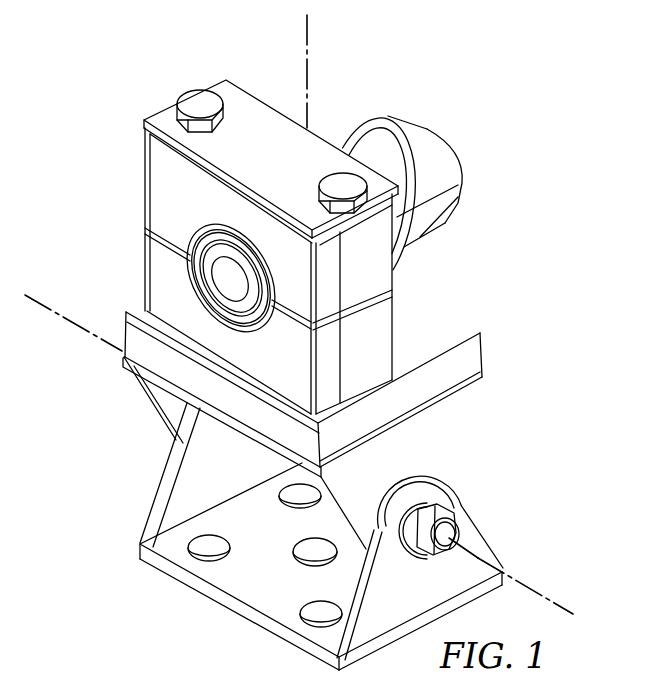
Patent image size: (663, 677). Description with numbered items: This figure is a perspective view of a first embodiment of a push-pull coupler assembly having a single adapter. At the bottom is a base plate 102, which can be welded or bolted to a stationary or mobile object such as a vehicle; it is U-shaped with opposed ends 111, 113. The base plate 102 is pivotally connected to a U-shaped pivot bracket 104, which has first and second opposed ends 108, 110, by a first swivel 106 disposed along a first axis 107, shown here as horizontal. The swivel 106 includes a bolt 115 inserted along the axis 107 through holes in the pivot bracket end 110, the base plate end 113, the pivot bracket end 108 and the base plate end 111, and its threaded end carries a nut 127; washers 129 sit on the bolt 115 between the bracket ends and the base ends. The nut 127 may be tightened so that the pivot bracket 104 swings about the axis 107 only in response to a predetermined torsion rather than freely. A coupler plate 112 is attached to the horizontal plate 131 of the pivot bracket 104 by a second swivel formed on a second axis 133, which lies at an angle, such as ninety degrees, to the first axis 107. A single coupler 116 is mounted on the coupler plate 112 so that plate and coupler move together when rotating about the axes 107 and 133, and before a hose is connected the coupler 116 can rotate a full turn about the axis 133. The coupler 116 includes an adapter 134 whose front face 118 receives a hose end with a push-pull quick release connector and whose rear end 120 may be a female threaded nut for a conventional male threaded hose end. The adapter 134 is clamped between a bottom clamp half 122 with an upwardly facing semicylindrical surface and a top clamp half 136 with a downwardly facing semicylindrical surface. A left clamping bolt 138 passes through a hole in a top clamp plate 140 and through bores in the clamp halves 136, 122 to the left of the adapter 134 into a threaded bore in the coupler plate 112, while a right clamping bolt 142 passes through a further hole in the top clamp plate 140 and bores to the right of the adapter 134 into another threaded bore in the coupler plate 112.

The base plate 102 is at (238, 590).
The pivot bracket 104 is at (136, 394).
The first swivel 106 is at (456, 541).
The first axis 107 is at (551, 598).
The first end of pivot bracket 108 is at (436, 527).
The second end of pivot bracket 110 is at (163, 402).
The base plate end 111 is at (318, 645).
The coupler plate 112 is at (427, 377).
The base plate end 113 is at (158, 500).
The bolt 115 is at (240, 440).
The coupler 116 is at (112, 132).
The front face 118 is at (217, 277).
The rear end 120 is at (402, 120).
The bottom clamp half 122 is at (160, 301).
The nut 127 is at (430, 550).
The washers 129 is at (433, 497).
The horizontal plate 131 is at (147, 378).
The second axis 133 is at (309, 50).
The adapter 134 is at (233, 291).
The top clamp half 136 is at (157, 192).
The left clamping bolt 138 is at (197, 108).
The top clamp plate 140 is at (248, 122).
The right clamping bolt 142 is at (324, 178).